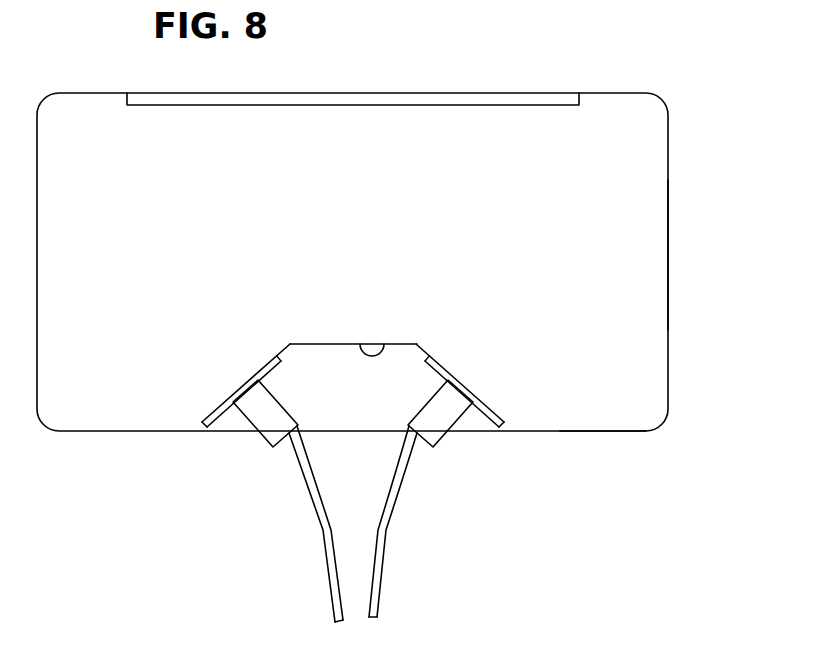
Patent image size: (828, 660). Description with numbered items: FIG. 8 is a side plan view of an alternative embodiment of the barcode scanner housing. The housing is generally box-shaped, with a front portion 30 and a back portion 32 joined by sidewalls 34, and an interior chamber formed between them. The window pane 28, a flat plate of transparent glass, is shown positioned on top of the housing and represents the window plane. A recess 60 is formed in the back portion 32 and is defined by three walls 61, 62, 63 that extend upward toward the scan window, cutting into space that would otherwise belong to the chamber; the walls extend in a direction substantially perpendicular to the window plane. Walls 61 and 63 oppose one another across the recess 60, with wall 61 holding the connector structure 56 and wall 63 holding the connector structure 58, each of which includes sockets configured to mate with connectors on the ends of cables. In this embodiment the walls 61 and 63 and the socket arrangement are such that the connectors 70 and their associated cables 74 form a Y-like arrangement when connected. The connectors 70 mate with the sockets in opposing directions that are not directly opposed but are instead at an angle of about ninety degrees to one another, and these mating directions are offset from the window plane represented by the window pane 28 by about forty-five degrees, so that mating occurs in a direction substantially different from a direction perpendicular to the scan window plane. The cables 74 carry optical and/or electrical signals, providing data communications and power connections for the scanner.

The window pane 28 is at (397, 99).
The front portion 30 is at (608, 93).
The back portion 32 is at (632, 432).
The sidewalls 34 is at (668, 250).
The connector structure 56 is at (468, 383).
The connector structure 58 is at (238, 383).
The recess 60 is at (323, 336).
The wall 61 is at (193, 431).
The wall 62 is at (383, 346).
The wall 63 is at (512, 428).
The connectors 70 is at (260, 412).
The cables 74 is at (322, 545).